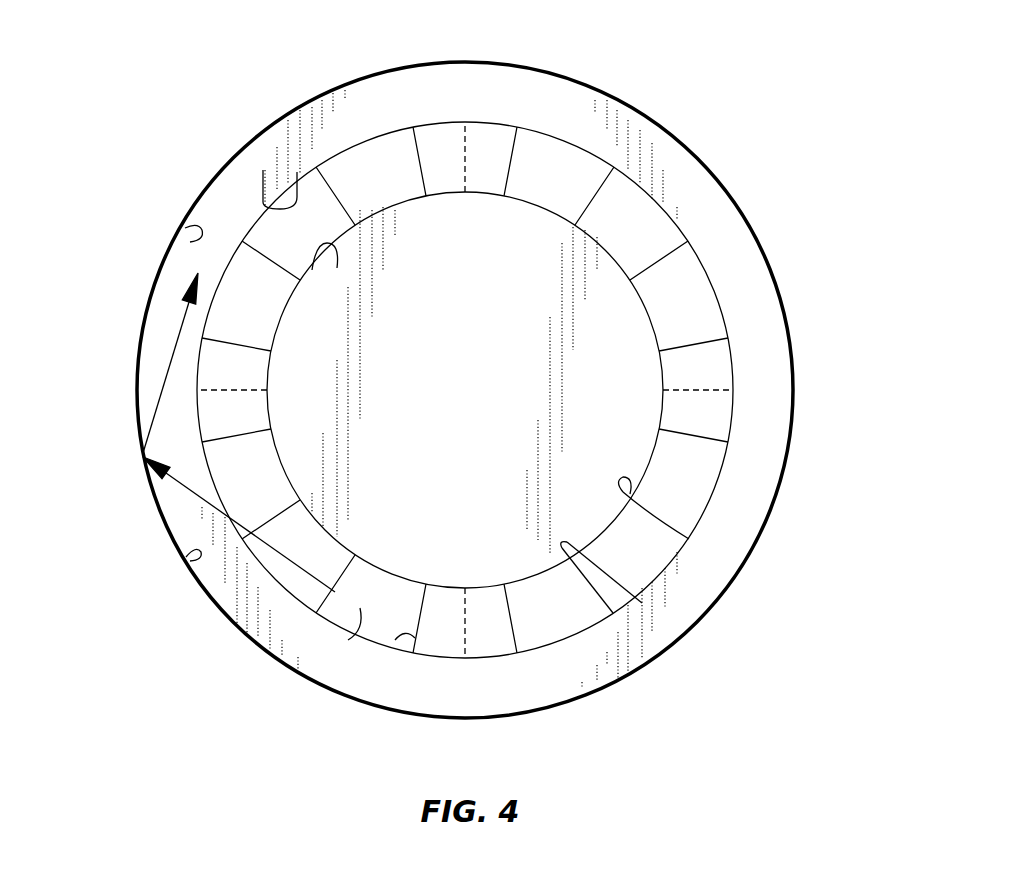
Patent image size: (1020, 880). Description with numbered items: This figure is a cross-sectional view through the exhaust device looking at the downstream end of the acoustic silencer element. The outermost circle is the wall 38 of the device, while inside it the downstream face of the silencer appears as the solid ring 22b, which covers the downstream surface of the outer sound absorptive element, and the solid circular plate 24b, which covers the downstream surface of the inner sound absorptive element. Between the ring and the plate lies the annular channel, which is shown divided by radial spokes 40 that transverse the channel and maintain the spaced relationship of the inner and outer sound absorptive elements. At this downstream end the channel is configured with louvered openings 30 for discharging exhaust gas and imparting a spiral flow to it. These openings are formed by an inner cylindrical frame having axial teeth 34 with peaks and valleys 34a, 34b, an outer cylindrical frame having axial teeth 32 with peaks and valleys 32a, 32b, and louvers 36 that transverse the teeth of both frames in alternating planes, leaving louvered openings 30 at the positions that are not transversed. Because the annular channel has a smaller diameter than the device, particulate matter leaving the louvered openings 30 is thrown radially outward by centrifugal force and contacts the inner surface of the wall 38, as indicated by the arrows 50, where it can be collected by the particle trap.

The solid ring 22b is at (558, 112).
The solid circular plate 24b is at (527, 260).
The louvered openings 30 is at (292, 600).
The outer cylindrical frame having axial teeth 32 is at (290, 206).
The inner cylindrical frame having axial teeth 34 is at (312, 268).
The louvers 36 is at (350, 637).
The wall 38 is at (190, 242).
The radial spokes 40 is at (463, 165).
The arrows 50 is at (172, 358).
The peak of axial tooth of outer cylindrical frame 32a is at (607, 605).
The peak of axial tooth of inner cylindrical frame 34a is at (642, 603).
The valley of axial tooth of outer cylindrical frame 32b is at (640, 552).
The valley of axial tooth of inner cylindrical frame 34b is at (623, 490).